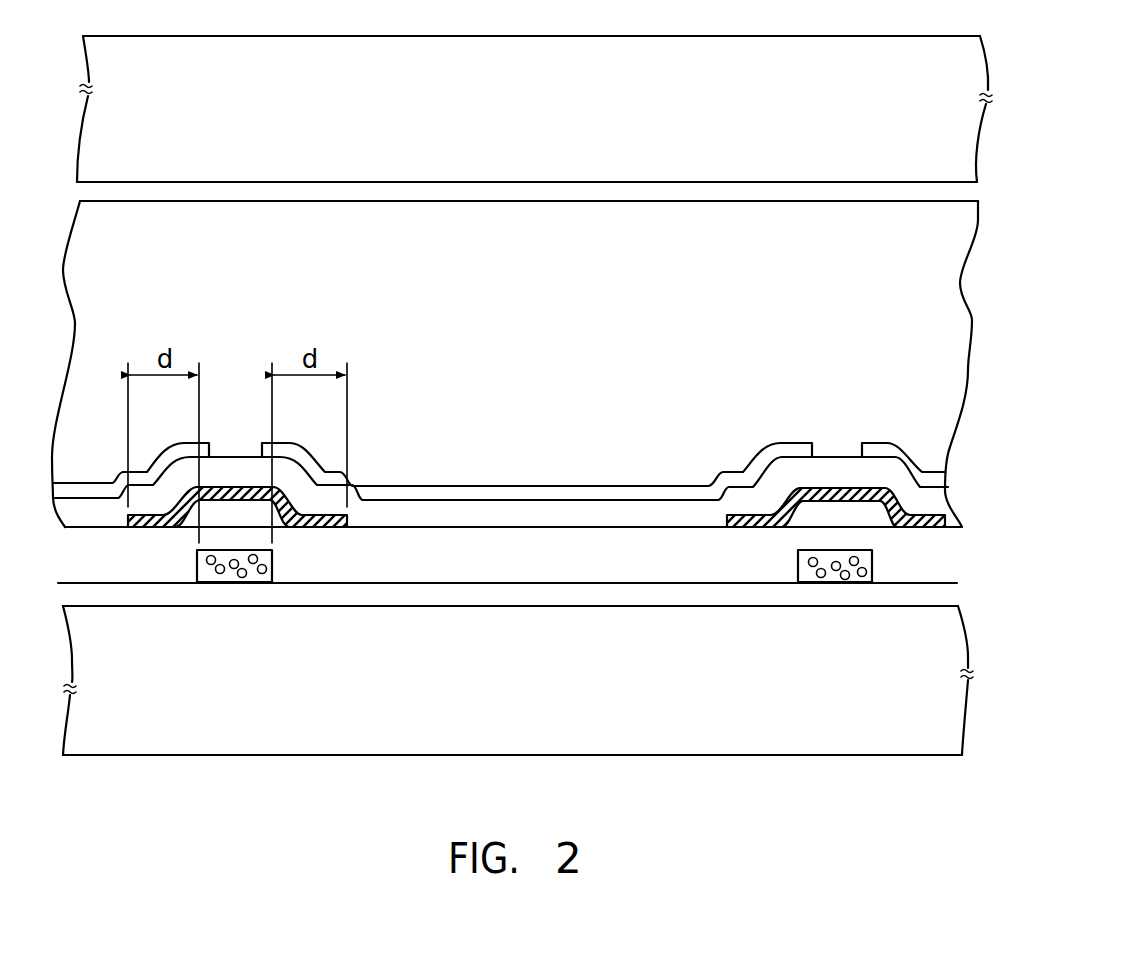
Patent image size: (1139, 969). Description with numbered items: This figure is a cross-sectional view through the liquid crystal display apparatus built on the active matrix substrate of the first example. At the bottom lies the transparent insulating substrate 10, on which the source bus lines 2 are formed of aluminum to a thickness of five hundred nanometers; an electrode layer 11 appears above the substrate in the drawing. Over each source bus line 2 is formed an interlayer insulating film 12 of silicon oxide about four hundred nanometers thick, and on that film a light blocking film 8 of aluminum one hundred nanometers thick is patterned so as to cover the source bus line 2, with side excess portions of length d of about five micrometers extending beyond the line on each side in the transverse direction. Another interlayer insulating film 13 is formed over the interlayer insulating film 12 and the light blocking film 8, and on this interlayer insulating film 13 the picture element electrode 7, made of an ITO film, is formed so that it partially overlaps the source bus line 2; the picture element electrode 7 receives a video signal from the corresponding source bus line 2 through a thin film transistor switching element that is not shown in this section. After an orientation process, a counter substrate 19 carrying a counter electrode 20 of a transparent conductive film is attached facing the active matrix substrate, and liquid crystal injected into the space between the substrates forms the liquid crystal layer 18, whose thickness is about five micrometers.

The source bus line 2 is at (252, 573).
The picture element electrode 7 is at (385, 490).
The light blocking film 8 is at (233, 490).
The transparent insulating substrate 10 is at (945, 692).
The transparent electrode 11 is at (947, 593).
The interlayer insulating film 12 is at (560, 542).
The interlayer insulating film 13 is at (502, 513).
The liquid crystal layer 18 is at (958, 337).
The counter substrate 19 is at (960, 122).
The counter electrode 20 is at (692, 190).